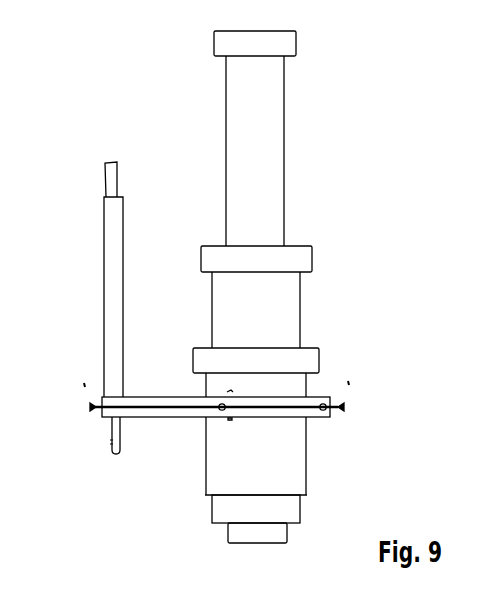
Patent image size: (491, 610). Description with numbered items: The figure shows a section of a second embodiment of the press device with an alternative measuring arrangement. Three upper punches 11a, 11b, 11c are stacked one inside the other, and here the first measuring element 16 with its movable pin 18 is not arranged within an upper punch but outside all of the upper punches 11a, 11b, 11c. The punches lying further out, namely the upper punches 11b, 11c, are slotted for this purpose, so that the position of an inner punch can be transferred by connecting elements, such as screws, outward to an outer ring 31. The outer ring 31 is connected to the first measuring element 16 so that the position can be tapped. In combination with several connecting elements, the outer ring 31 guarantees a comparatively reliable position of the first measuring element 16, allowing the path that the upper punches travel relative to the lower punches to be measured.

The upper punch 11a is at (283, 100).
The upper punch 11b is at (298, 300).
The upper punch 11c is at (320, 355).
The first measuring element 16 is at (107, 345).
The movable pin 18 is at (110, 430).
The outer ring 31 is at (297, 413).